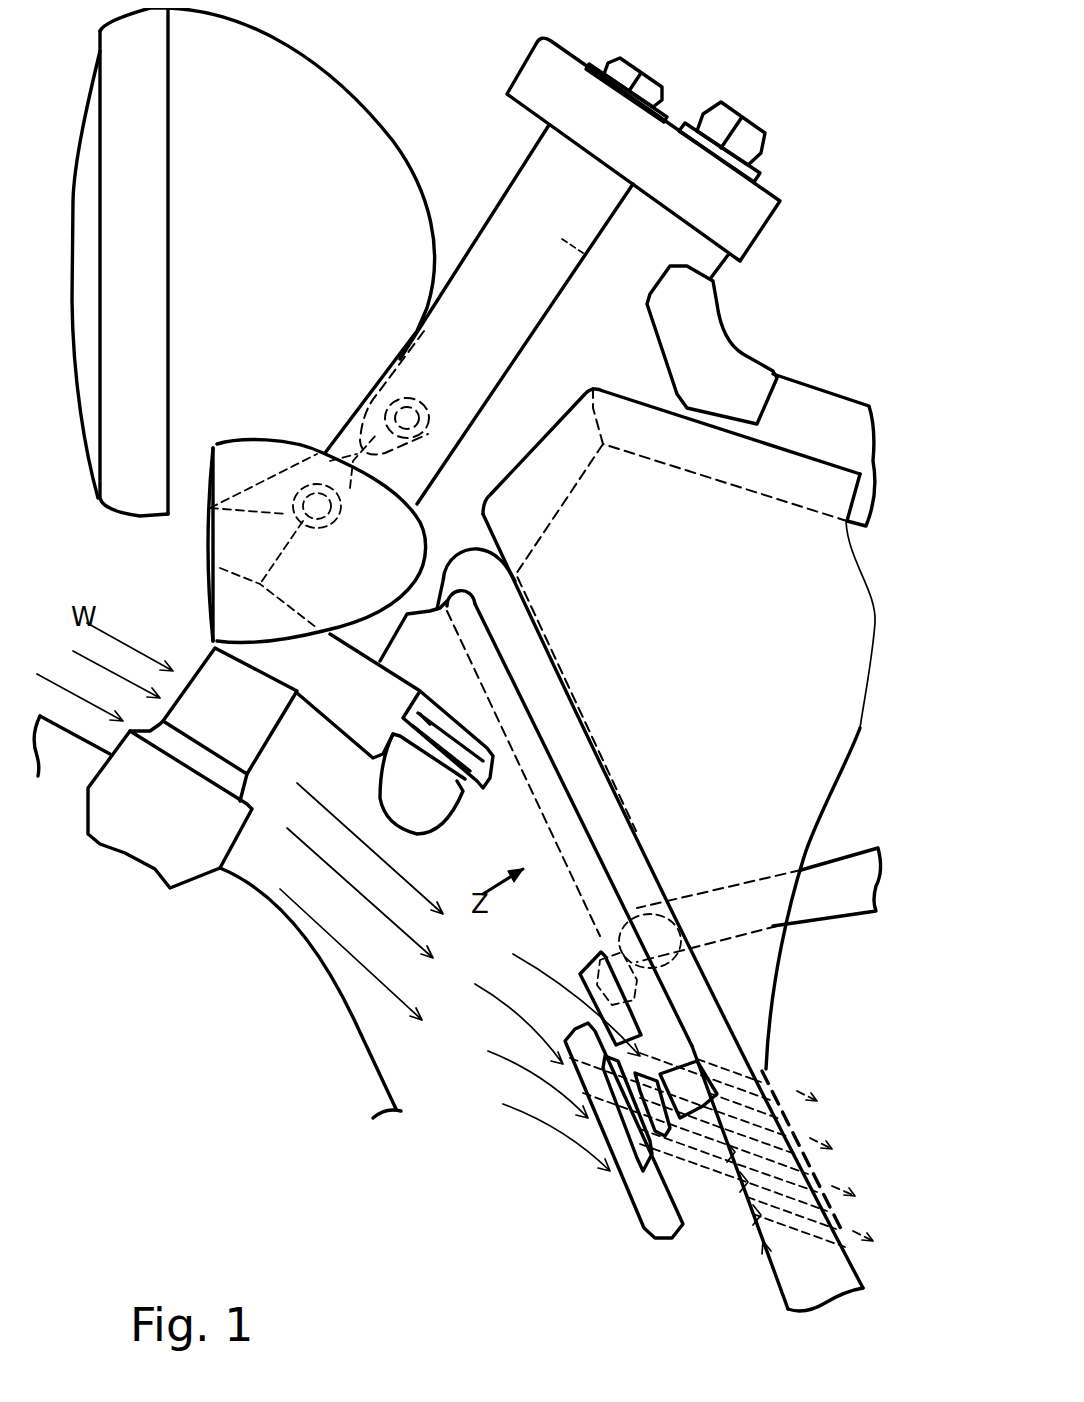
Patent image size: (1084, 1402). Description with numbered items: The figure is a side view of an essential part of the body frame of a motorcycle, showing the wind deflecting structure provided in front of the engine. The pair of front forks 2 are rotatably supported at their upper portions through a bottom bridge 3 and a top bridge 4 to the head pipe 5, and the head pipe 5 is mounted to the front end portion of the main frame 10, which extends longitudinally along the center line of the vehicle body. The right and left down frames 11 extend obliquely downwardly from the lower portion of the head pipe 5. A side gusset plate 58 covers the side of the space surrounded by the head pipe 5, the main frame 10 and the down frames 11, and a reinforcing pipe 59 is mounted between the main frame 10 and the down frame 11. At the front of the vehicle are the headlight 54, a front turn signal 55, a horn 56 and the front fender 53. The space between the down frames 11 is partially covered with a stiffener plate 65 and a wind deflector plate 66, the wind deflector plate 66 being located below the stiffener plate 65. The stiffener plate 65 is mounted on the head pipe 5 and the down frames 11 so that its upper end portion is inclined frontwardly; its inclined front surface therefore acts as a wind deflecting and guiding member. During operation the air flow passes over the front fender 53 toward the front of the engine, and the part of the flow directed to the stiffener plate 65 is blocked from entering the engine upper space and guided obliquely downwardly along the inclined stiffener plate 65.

The front fork 2 is at (543, 165).
The bottom bridge 3 is at (213, 617).
The top bridge 4 is at (538, 72).
The head pipe 5 is at (602, 248).
The main frame 10 is at (830, 400).
The down frame 11 is at (622, 878).
The front fender 53 is at (360, 1027).
The headlight 54 is at (328, 88).
The front turn signal 55 is at (227, 537).
The horn 56 is at (647, 1206).
The side gusset plate 58 is at (842, 621).
The reinforcing pipe 59 is at (838, 912).
The stiffener plate 65 is at (507, 801).
The wind deflector plate 66 is at (763, 1240).